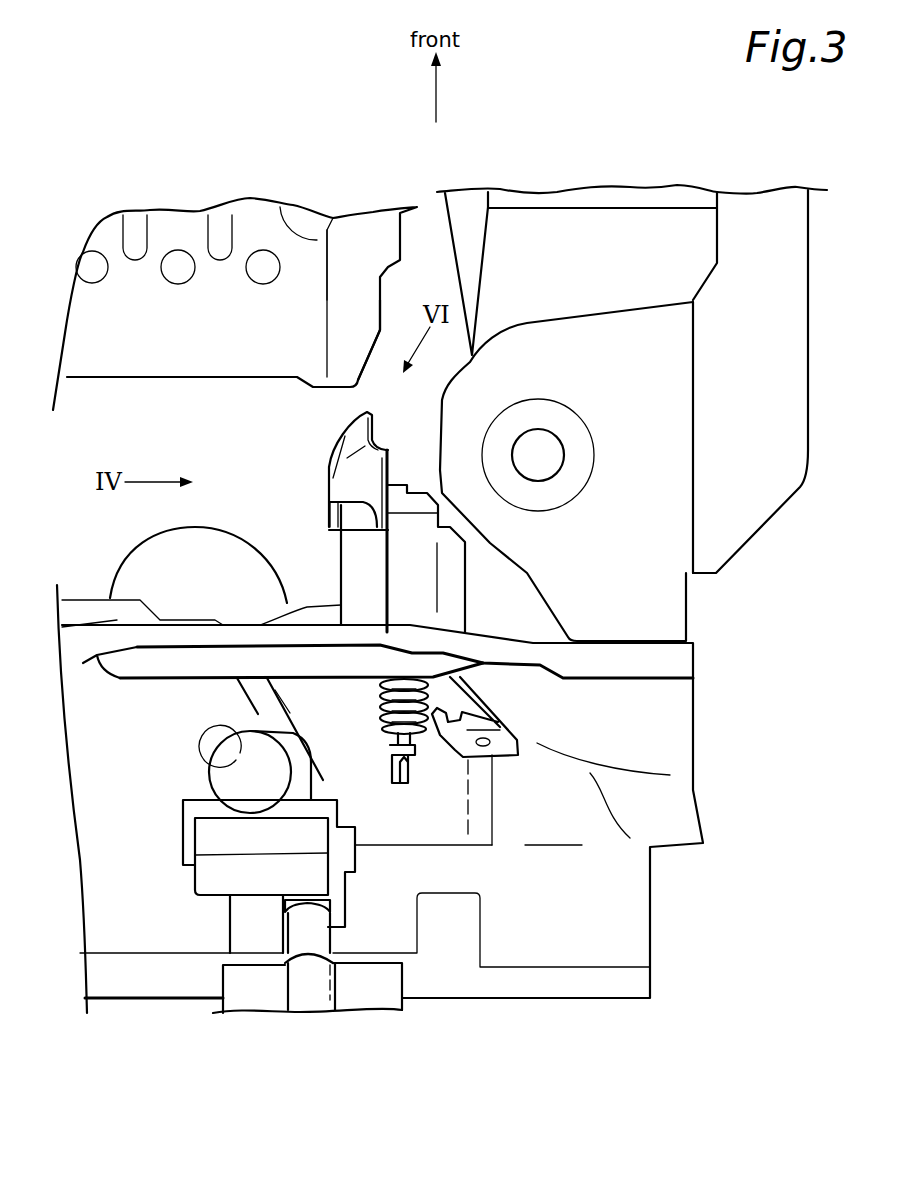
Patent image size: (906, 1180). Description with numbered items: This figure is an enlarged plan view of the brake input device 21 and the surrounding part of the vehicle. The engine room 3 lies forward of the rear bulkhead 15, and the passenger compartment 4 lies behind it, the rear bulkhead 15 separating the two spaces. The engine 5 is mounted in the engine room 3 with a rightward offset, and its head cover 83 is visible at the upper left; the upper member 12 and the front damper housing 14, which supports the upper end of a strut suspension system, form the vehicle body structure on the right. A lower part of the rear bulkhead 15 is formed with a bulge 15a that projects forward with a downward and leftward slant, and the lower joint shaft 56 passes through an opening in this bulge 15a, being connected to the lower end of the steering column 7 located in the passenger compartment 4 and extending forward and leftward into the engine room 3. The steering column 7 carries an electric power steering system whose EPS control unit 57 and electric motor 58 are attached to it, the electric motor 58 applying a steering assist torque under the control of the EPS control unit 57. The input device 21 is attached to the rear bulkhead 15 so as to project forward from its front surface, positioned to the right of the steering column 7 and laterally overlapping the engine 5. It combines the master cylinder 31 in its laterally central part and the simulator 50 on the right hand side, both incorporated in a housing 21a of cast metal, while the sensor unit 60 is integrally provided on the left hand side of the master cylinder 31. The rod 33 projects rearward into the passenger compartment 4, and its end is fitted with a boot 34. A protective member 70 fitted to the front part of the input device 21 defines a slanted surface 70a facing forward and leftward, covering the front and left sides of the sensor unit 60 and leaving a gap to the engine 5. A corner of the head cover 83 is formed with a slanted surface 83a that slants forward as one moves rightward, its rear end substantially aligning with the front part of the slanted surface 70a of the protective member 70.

The engine room 3 is at (214, 426).
The passenger compartment 4 is at (142, 892).
The engine 5 is at (340, 203).
The steering column 7 is at (327, 940).
The upper member 12 is at (790, 302).
The front damper housing 14 is at (655, 475).
The rear bulkhead 15 is at (673, 662).
The bulge 15a is at (157, 548).
The input device 21 is at (320, 538).
The housing 21a is at (452, 605).
The master cylinder 31 is at (407, 532).
The rod 33 is at (398, 737).
The boot 34 is at (380, 688).
The simulator 50 is at (452, 563).
The lower joint shaft 56 is at (243, 707).
The EPS control unit 57 is at (213, 888).
The electric motor 58 is at (222, 777).
The sensor unit 60 is at (350, 572).
The protective member 70 is at (378, 448).
The slanted surface 70a is at (348, 437).
The head cover 83 is at (255, 220).
The slanted surface 83a is at (373, 350).